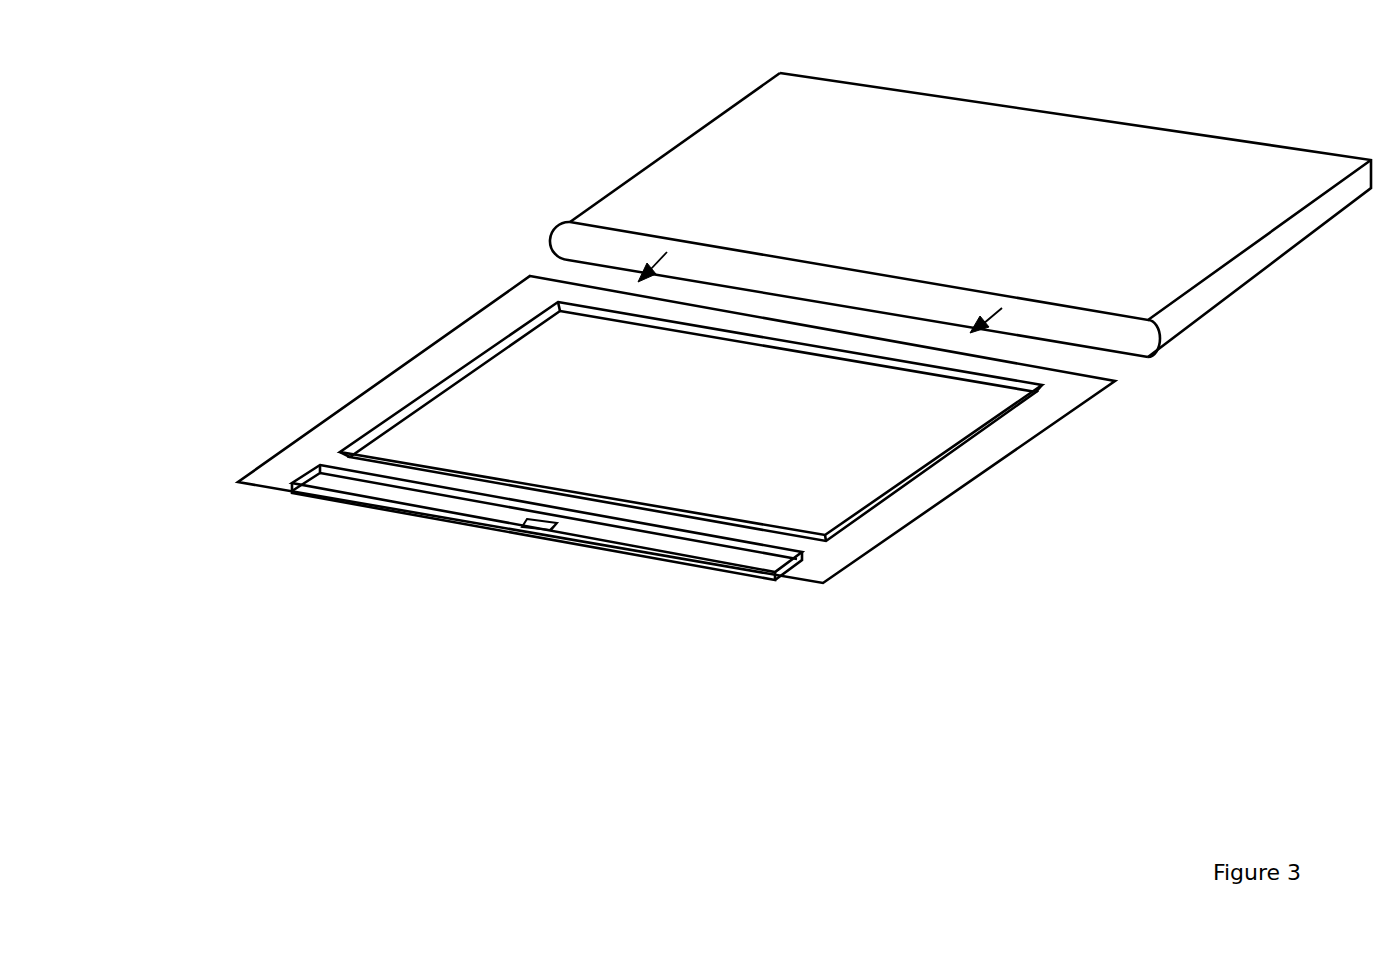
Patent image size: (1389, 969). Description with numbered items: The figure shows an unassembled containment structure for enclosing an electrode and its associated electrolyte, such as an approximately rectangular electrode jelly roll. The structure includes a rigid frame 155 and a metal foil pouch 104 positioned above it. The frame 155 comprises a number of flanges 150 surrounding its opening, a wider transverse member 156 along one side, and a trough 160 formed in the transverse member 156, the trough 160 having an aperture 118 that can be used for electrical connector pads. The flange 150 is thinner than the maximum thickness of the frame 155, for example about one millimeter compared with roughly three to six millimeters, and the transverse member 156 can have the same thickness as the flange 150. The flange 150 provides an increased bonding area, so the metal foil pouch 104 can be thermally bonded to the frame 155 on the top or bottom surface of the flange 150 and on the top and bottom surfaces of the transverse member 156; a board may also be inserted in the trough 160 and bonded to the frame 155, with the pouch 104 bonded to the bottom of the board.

The metal foil pouch 104 is at (715, 170).
The aperture 118 is at (520, 526).
The flange 150 is at (465, 348).
The frame 155 is at (1027, 458).
The transverse member 156 is at (600, 550).
The trough 160 is at (368, 493).